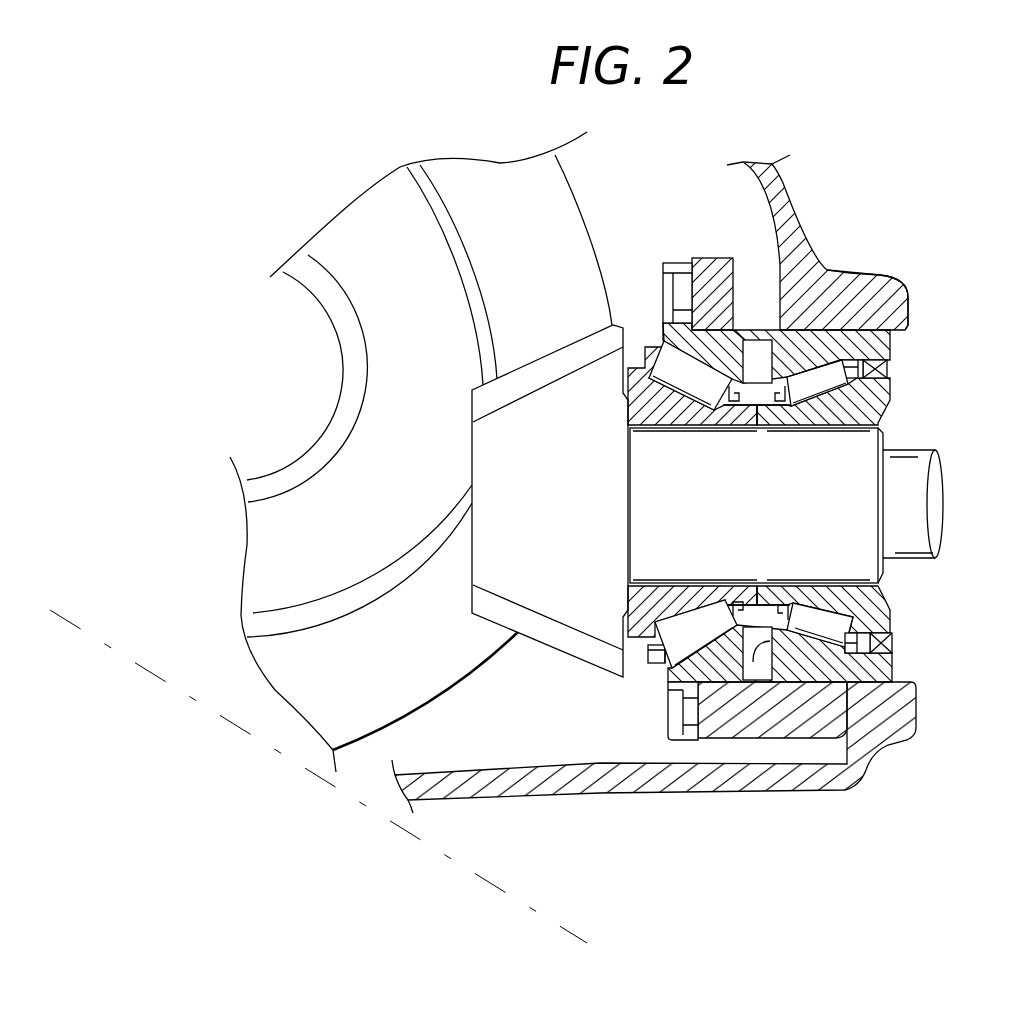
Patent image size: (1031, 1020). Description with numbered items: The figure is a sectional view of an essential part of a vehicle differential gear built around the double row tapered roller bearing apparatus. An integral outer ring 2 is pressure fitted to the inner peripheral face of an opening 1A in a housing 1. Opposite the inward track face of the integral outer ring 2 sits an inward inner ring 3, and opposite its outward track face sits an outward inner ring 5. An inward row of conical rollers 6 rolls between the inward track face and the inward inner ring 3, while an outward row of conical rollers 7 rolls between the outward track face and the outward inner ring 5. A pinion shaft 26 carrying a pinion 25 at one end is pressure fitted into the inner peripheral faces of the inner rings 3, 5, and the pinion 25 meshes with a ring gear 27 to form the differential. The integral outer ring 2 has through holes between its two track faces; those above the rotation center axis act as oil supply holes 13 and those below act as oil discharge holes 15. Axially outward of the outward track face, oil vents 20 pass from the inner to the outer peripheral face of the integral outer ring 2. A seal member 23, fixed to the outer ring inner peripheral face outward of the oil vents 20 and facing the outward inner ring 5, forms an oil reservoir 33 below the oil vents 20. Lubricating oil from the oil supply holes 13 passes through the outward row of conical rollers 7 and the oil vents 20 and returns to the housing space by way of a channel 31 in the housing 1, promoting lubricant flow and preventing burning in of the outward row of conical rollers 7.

The housing 1 is at (802, 210).
The opening 1A is at (903, 295).
The integral outer ring 2 is at (895, 345).
The inward inner ring 3 is at (633, 372).
The outward inner ring 5 is at (887, 393).
The inward row of conical rollers 6 is at (700, 370).
The outward row of conical rollers 7 is at (800, 366).
The oil supply holes 13 is at (765, 360).
The oil discharge holes 15 is at (762, 655).
The oil vents 20 is at (865, 688).
The seal member 23 is at (893, 647).
The pinion 25 is at (550, 648).
The pinion shaft 26 is at (913, 460).
The ring gear 27 is at (347, 233).
The channel 31 is at (845, 745).
The oil reservoir 33 is at (895, 637).